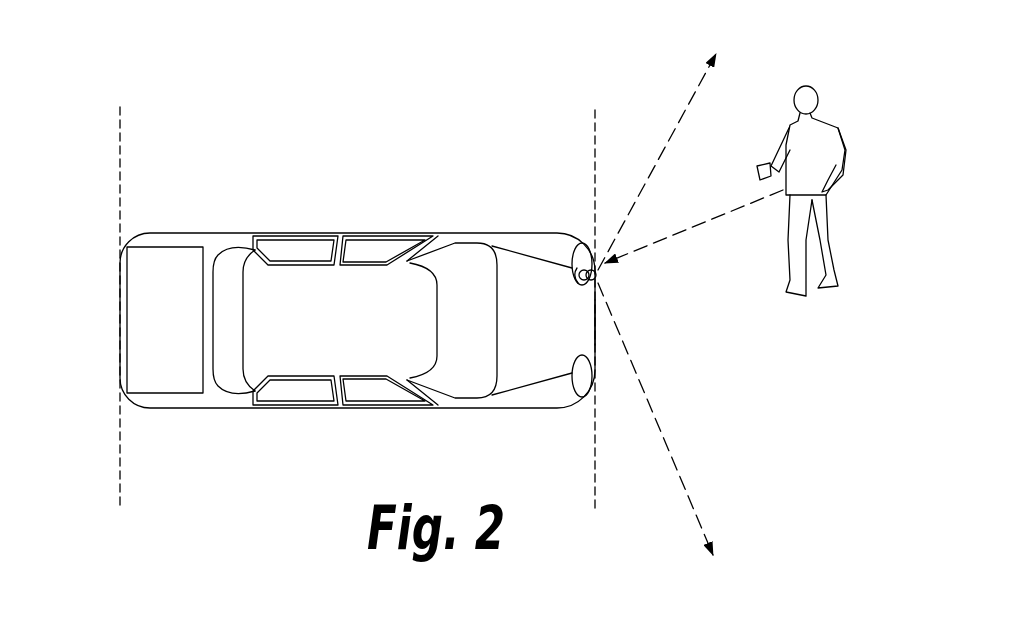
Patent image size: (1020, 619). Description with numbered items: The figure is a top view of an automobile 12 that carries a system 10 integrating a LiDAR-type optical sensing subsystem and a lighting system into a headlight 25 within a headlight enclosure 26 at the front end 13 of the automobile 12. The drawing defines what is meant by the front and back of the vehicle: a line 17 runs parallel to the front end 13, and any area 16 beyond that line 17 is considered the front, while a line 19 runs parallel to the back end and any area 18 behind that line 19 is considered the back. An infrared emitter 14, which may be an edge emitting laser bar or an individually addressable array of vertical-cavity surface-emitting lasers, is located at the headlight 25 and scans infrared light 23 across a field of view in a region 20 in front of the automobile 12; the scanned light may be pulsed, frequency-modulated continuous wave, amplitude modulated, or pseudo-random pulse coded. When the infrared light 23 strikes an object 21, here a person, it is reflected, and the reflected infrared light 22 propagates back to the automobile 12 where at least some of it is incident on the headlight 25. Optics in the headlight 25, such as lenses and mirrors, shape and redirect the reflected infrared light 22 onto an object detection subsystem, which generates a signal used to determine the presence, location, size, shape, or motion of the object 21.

The system 10 is at (358, 229).
The automobile 12 is at (322, 232).
The front end 13 is at (593, 330).
The infrared emitter 14 is at (588, 290).
The area 16 is at (654, 113).
The line 17 is at (594, 160).
The area 18 is at (77, 311).
The line 19 is at (118, 158).
The region 20 is at (683, 321).
The object 21 is at (833, 138).
The reflected infrared light 22 is at (685, 232).
The infrared light 23 is at (672, 133).
The headlight 25 is at (576, 280).
The headlight enclosure 26 is at (570, 250).